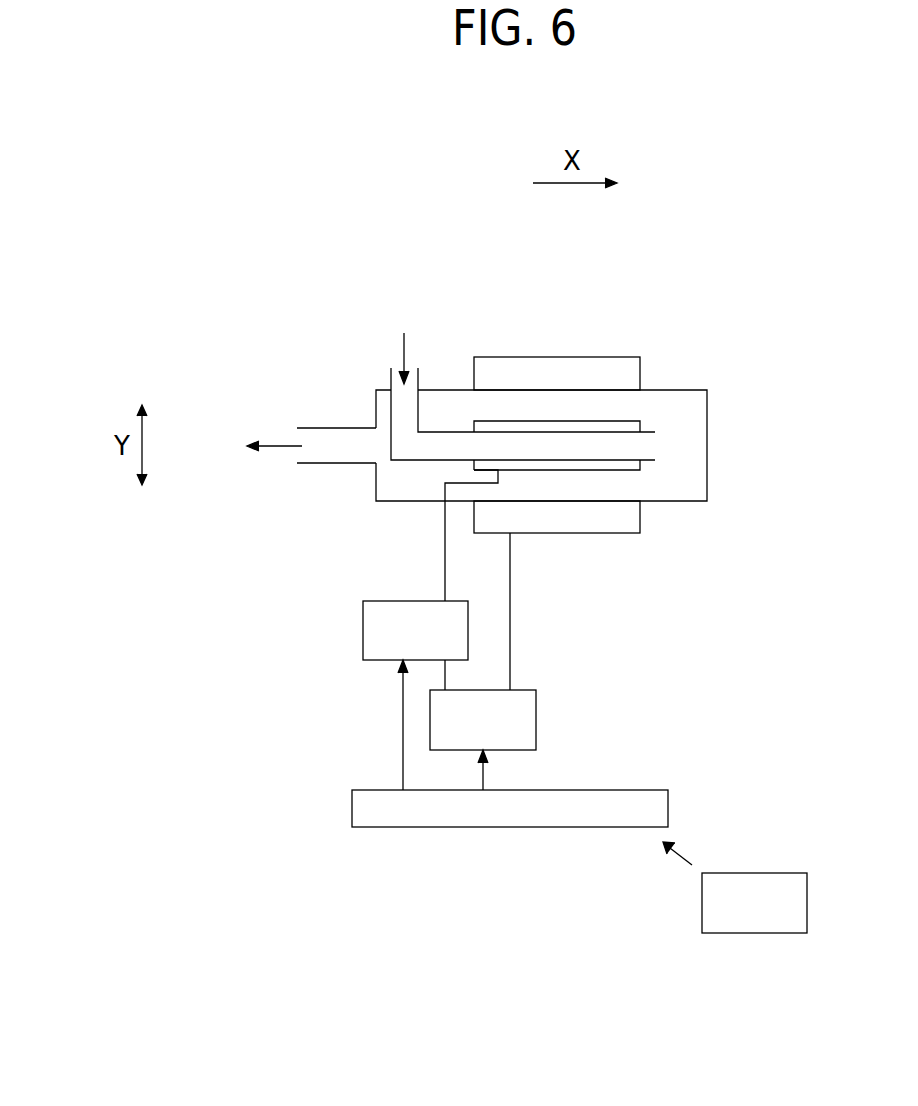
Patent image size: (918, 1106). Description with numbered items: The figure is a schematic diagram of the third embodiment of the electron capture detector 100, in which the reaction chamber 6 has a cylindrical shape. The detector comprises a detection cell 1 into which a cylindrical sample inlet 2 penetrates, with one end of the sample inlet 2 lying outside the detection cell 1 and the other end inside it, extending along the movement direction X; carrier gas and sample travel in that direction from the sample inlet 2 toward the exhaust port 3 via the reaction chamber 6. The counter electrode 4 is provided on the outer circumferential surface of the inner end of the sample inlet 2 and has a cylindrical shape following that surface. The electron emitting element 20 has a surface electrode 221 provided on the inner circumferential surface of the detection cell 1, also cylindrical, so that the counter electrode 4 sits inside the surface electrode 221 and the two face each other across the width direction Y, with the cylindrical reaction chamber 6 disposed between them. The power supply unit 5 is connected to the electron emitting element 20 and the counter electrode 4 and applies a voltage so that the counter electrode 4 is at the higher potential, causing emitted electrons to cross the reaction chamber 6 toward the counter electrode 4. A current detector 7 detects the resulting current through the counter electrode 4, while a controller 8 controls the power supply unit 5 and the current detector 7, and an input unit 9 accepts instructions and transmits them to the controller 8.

The electron capture detector 100 is at (323, 322).
The detection cell 1 is at (382, 388).
The sample inlet 2 is at (397, 367).
The exhaust port 3 is at (302, 435).
The counter electrode 4 is at (640, 422).
The power supply unit 5 is at (536, 715).
The reaction chamber 6 is at (483, 405).
The current detector 7 is at (363, 622).
The controller 8 is at (453, 827).
The input unit 9 is at (730, 933).
The electron emitting element 20 is at (542, 357).
The surface electrode 221 is at (604, 398).